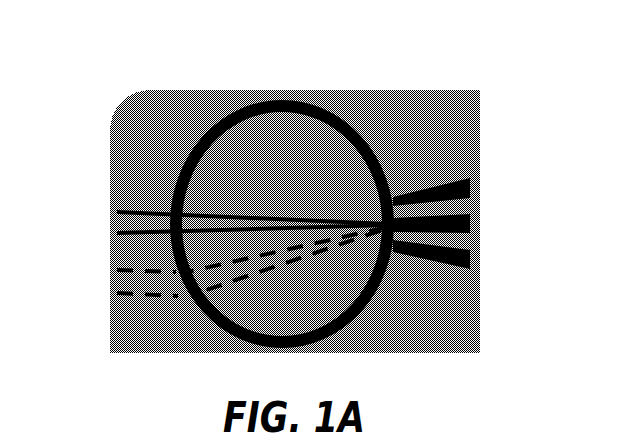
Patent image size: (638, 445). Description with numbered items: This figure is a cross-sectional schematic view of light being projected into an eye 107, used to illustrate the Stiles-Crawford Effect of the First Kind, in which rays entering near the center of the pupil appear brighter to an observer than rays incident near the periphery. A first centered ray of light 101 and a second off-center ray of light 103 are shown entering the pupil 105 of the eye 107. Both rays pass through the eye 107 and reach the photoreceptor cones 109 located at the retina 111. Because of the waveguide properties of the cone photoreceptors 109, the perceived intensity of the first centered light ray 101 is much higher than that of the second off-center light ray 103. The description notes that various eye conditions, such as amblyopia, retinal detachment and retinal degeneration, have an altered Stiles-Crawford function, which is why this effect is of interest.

The first centered ray of light 101 is at (117, 206).
The second off-center ray of light 103 is at (128, 294).
The pupil 105 is at (178, 164).
The eye 107 is at (258, 118).
The photoreceptor cones 109 is at (480, 183).
The retina 111 is at (396, 178).